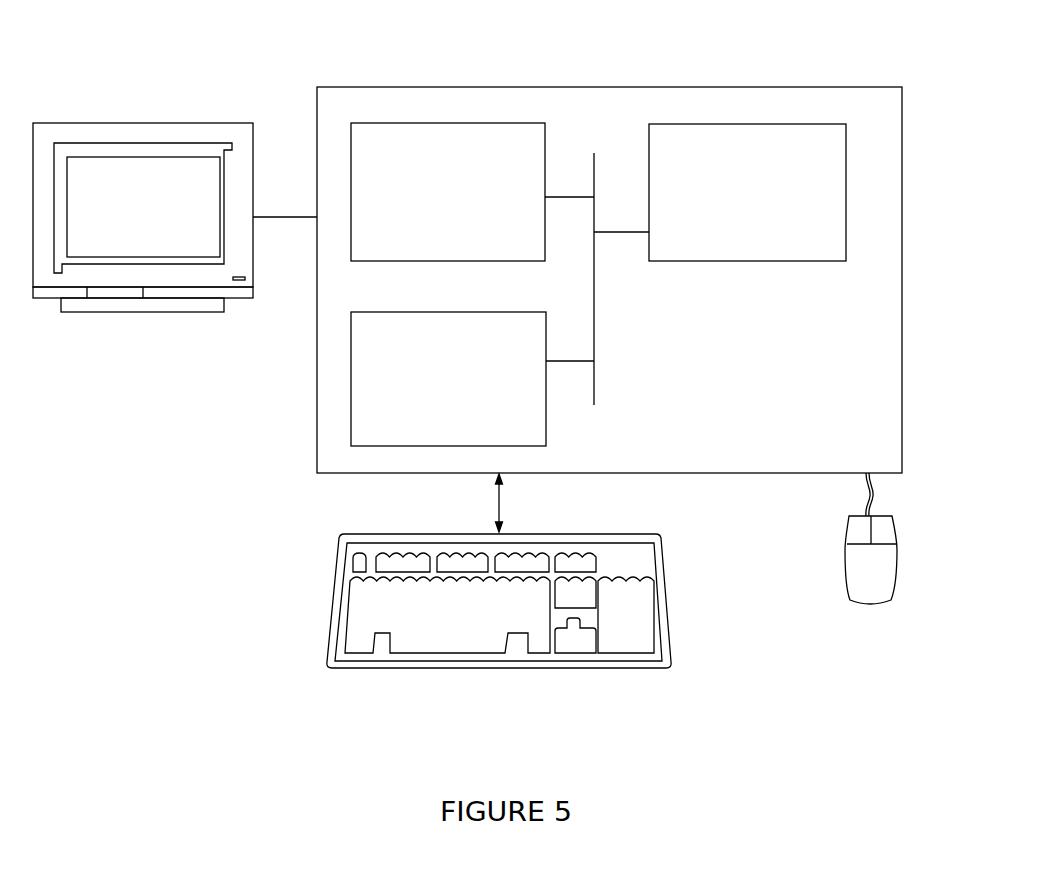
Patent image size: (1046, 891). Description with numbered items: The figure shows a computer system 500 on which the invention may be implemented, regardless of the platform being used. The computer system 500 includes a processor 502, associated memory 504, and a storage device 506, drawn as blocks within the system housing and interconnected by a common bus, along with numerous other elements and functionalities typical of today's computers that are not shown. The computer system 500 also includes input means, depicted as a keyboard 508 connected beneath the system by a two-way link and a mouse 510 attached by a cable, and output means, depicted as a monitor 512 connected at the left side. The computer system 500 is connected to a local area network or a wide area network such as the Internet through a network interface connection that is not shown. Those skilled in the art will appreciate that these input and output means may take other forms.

The computer system 500 is at (635, 50).
The processor 502 is at (718, 205).
The associated memory 504 is at (431, 202).
The storage device 506 is at (428, 389).
The keyboard 508 is at (428, 624).
The mouse 510 is at (852, 581).
The monitor 512 is at (123, 221).